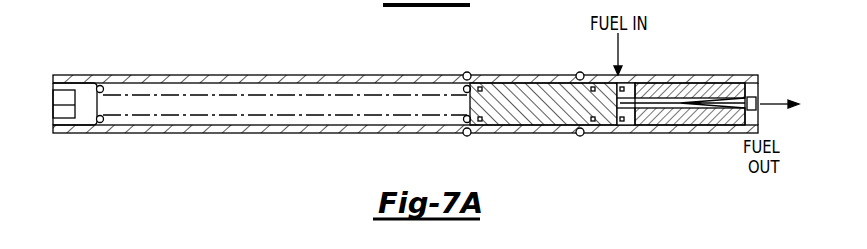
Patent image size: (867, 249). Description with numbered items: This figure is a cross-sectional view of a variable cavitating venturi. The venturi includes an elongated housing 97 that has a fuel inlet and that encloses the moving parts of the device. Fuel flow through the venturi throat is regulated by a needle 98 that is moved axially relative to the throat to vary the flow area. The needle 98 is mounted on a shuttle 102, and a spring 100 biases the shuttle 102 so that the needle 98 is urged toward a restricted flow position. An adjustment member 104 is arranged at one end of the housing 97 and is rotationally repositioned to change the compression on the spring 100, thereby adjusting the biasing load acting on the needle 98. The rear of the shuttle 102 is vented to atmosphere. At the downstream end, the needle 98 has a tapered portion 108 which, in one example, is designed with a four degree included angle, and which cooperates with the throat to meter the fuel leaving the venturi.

The housing 97 is at (167, 78).
The needle 98 is at (625, 107).
The spring 100 is at (463, 86).
The shuttle 102 is at (537, 110).
The adjustment member 104 is at (85, 82).
The tapered portion 108 is at (707, 104).